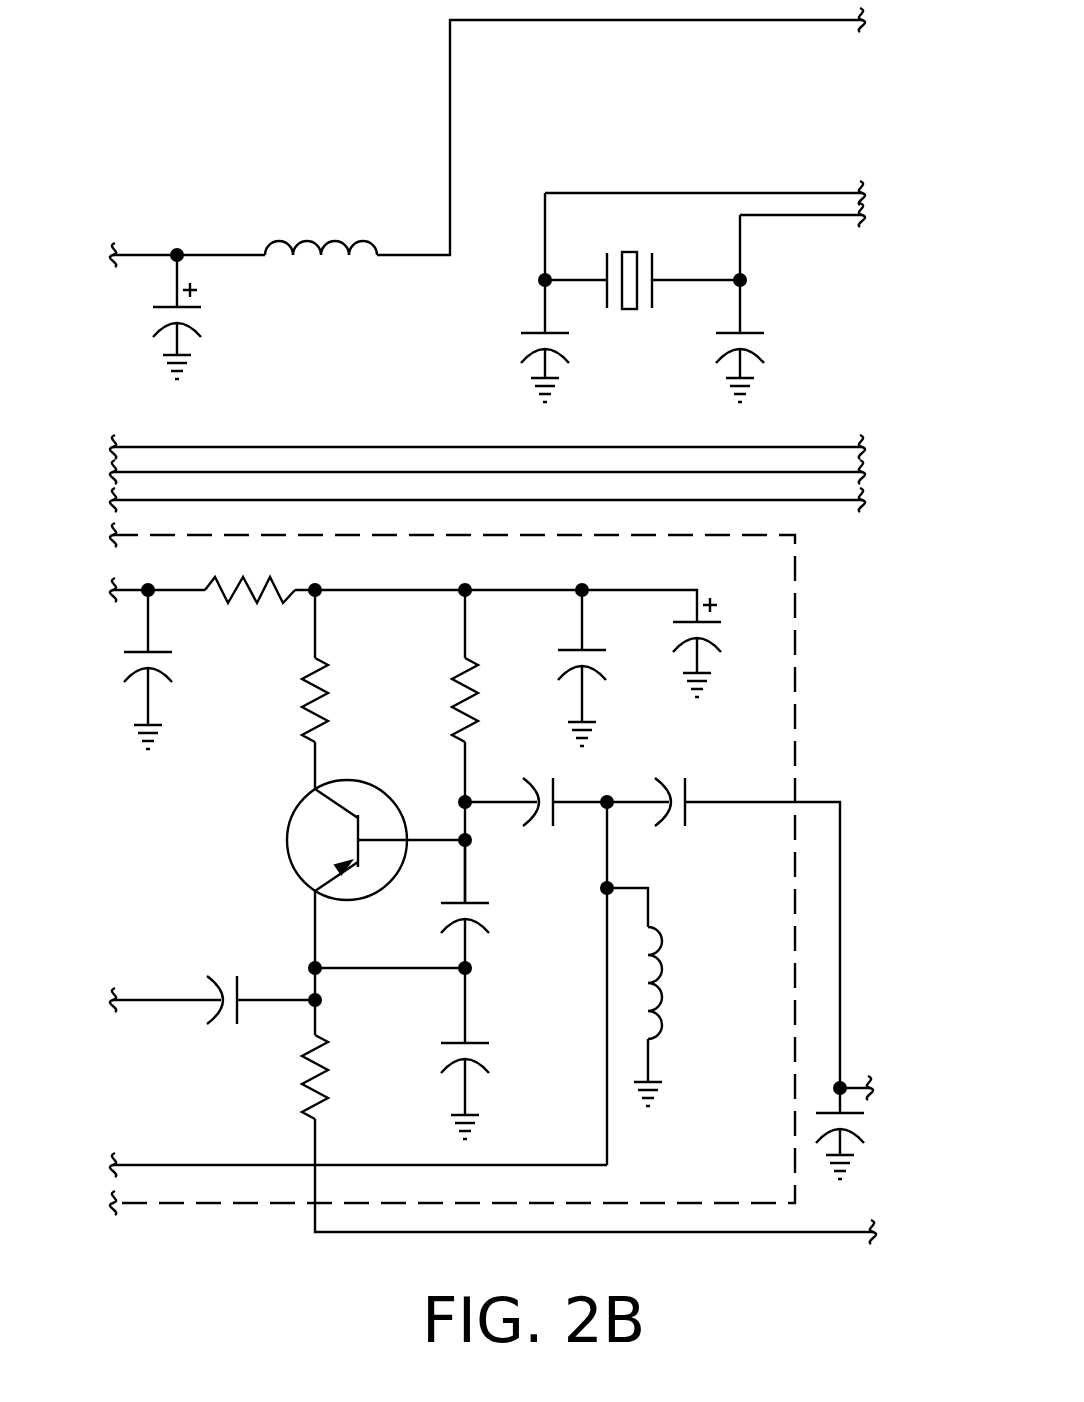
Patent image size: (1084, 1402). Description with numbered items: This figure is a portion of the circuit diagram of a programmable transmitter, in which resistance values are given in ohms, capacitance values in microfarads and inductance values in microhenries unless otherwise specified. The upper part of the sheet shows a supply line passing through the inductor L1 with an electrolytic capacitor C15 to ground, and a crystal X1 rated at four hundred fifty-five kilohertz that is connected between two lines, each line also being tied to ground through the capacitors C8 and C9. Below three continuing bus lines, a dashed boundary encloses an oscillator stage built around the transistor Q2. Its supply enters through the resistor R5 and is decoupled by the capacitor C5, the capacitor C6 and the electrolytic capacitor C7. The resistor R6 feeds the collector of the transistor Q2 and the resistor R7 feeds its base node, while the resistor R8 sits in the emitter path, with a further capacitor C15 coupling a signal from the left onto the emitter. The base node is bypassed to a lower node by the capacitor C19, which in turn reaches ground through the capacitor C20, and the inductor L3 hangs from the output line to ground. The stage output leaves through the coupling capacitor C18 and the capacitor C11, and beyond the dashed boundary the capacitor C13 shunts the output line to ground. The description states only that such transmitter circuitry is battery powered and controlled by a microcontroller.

The capacitor C15 is at (214, 639).
The inductor L1 is at (321, 216).
The crystal resonator X1 is at (652, 315).
The capacitor C8 is at (504, 341).
The capacitor C9 is at (787, 341).
The resistor R5 is at (250, 590).
The capacitor C5 is at (174, 694).
The resistor R6 is at (336, 700).
The resistor R7 is at (494, 700).
The capacitor C6 is at (608, 690).
The capacitor C7 is at (724, 648).
The transistor Q2 is at (376, 857).
The capacitor C18 is at (539, 803).
The capacitor C11 is at (675, 805).
The capacitor C19 is at (504, 899).
The capacitor C20 is at (504, 1084).
The resistor R8 is at (346, 1077).
The inductor L3 is at (686, 1016).
The capacitor C13 is at (876, 1133).